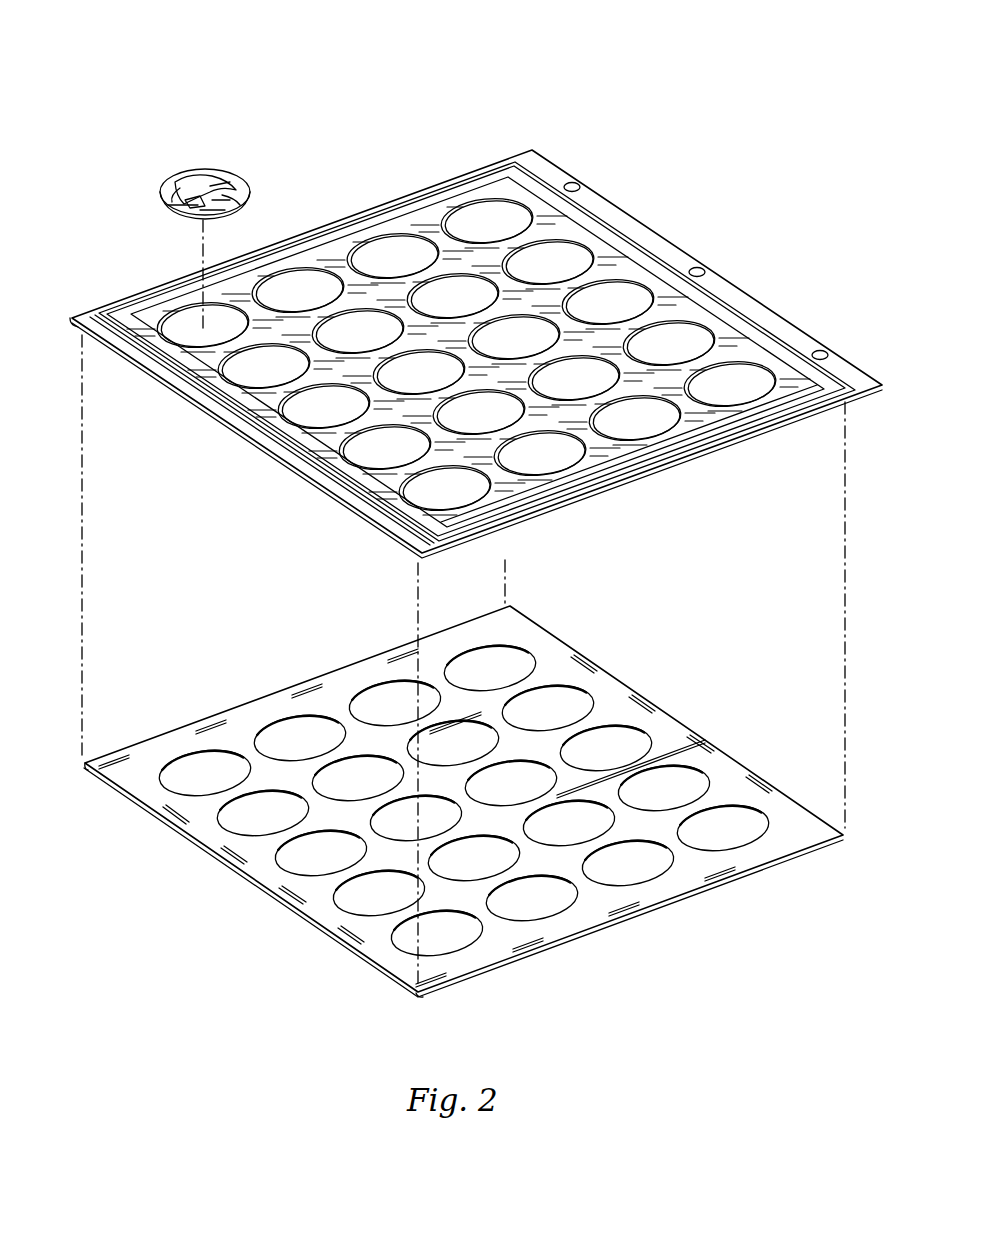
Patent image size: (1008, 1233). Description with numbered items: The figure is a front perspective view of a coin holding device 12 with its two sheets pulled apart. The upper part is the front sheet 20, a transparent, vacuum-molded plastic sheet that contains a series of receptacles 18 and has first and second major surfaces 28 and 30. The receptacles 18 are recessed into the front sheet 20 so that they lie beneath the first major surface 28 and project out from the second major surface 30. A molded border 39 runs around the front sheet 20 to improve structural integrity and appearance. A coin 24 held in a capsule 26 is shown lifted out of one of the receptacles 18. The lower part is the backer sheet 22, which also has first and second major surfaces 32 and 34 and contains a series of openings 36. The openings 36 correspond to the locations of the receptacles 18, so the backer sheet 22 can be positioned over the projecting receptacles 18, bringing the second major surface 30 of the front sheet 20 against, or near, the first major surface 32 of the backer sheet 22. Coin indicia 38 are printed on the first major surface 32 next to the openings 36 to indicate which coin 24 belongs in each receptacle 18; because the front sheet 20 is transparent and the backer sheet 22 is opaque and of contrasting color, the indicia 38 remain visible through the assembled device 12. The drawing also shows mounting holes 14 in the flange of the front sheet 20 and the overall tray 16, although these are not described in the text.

The coin holding device 12 is at (488, 74).
The mounting holes 14 is at (578, 183).
The tray 16 is at (640, 228).
The receptacle 18 is at (186, 323).
The front sheet 20 is at (418, 205).
The backer sheet 22 is at (800, 834).
The coin 24 is at (195, 167).
The capsule 26 is at (250, 186).
The first major surface 28 is at (518, 500).
The second major surface 30 is at (258, 450).
The first major surface 32 is at (710, 878).
The second major surface 34 is at (315, 926).
The opening 36 is at (309, 743).
The coin indicia 38 is at (169, 736).
The molded border 39 is at (82, 315).